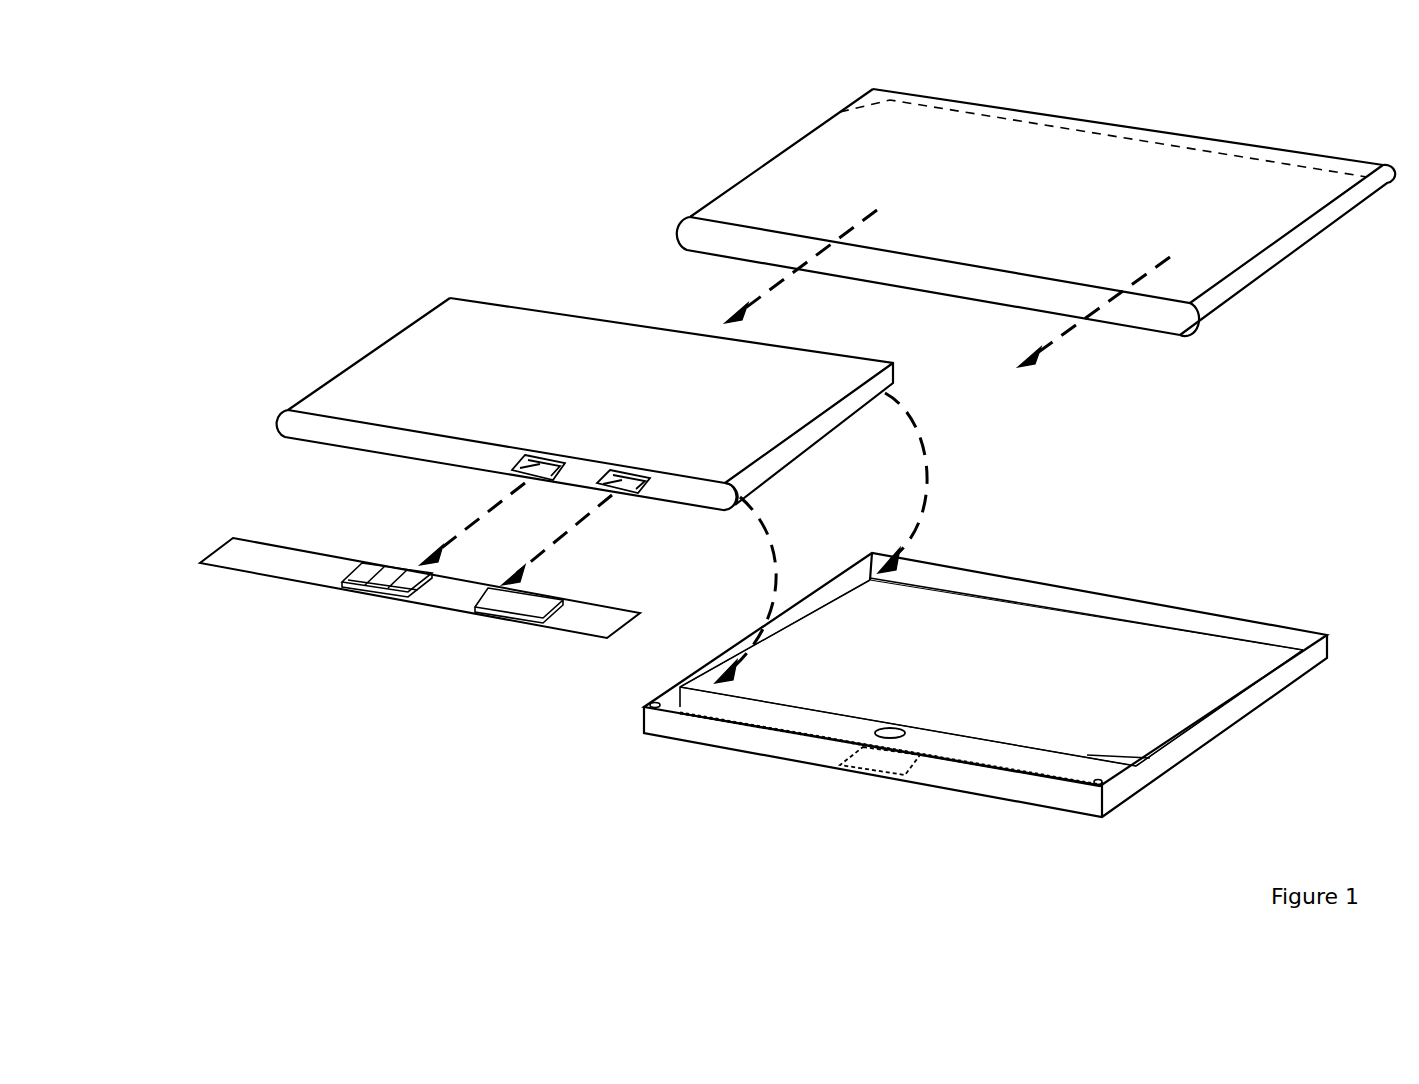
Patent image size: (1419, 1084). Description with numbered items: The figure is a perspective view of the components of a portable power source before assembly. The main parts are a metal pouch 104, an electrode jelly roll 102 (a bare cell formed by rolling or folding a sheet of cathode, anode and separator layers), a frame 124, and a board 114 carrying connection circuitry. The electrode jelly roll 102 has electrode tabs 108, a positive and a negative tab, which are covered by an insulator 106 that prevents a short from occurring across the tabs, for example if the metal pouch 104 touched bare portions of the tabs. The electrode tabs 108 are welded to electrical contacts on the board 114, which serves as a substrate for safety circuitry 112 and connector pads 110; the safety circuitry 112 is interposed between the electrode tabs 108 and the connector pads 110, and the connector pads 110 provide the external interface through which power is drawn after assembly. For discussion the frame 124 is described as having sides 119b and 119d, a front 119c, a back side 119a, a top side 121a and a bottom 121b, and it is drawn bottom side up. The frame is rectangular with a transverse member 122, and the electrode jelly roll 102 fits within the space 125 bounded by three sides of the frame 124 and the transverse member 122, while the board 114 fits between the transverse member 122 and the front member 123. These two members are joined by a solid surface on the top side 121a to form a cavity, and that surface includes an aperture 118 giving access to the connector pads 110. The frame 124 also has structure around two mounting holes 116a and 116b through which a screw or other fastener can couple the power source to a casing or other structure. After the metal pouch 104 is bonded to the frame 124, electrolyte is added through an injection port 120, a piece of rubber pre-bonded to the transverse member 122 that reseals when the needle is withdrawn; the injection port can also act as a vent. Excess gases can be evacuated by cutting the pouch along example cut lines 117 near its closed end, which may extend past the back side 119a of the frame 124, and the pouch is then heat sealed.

The electrode jelly roll 102 is at (482, 343).
The metal pouch 104 is at (815, 212).
The insulator 106 is at (610, 462).
The electrode tabs 108 is at (610, 490).
The connector pads 110 is at (337, 582).
The safety circuitry 112 is at (523, 600).
The board 114 is at (230, 562).
The mounting hole 116a is at (648, 704).
The mounting hole 116b is at (1100, 783).
The cut lines 117 is at (975, 118).
The aperture 118 is at (877, 762).
The back side 119a is at (995, 577).
The side 119b is at (1263, 690).
The front 119c is at (760, 743).
The back 119d is at (820, 598).
The injection port 120 is at (898, 738).
The top side 121a is at (1303, 682).
The bottom 121b is at (1287, 622).
The transverse member 122 is at (1080, 754).
The front member 123 is at (904, 812).
The frame 124 is at (948, 709).
The space 125 is at (1127, 667).